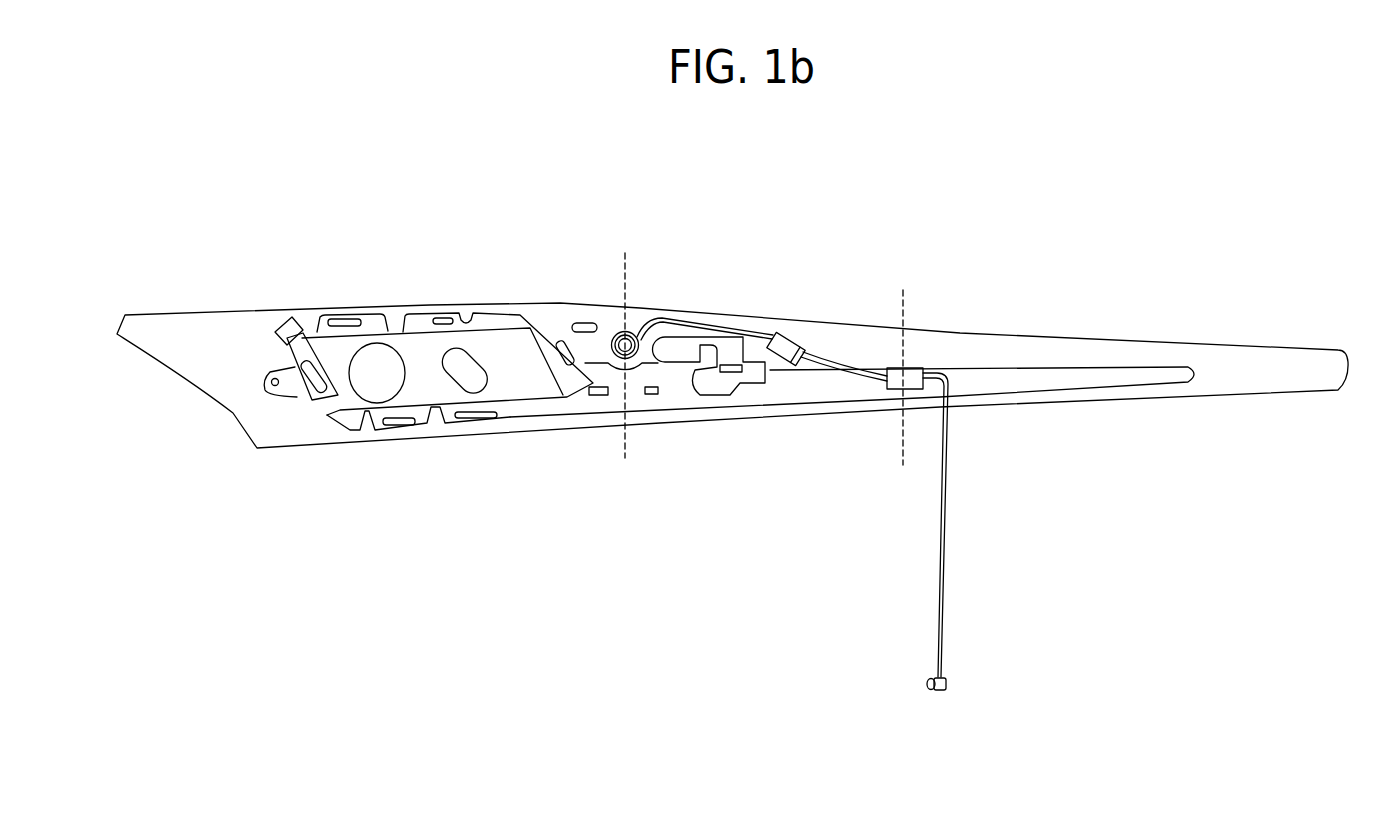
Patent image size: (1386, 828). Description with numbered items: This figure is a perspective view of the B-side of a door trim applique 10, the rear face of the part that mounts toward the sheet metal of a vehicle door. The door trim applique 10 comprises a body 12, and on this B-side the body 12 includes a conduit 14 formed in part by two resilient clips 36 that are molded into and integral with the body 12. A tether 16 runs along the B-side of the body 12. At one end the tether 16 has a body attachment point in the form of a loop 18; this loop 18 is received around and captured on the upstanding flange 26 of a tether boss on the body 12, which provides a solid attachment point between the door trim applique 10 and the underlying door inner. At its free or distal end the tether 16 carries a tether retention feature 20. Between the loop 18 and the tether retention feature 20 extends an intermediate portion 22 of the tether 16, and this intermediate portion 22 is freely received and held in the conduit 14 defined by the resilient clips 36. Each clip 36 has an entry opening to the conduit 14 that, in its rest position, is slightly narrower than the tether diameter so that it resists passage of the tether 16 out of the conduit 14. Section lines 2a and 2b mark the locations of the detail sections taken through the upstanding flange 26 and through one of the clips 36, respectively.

The door trim applique 10 is at (255, 222).
The body 12 is at (238, 440).
The conduit 14 is at (795, 336).
The tether 16 is at (947, 543).
The loop 18 is at (617, 331).
The tether retention feature 20 is at (942, 690).
The intermediate portion 22 is at (853, 372).
The upstanding flange 26 is at (615, 357).
The resilient clips 36 is at (905, 362).
The section line 2a is at (627, 265).
The section line 2b is at (903, 300).